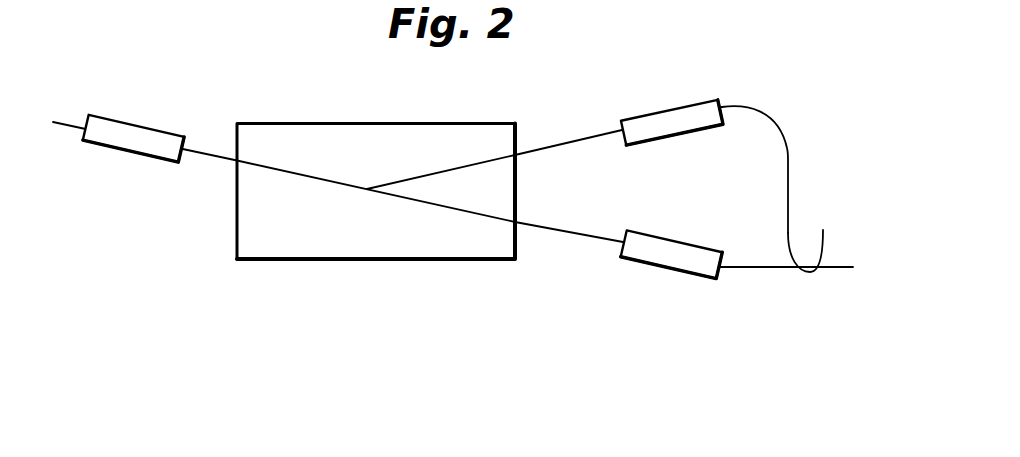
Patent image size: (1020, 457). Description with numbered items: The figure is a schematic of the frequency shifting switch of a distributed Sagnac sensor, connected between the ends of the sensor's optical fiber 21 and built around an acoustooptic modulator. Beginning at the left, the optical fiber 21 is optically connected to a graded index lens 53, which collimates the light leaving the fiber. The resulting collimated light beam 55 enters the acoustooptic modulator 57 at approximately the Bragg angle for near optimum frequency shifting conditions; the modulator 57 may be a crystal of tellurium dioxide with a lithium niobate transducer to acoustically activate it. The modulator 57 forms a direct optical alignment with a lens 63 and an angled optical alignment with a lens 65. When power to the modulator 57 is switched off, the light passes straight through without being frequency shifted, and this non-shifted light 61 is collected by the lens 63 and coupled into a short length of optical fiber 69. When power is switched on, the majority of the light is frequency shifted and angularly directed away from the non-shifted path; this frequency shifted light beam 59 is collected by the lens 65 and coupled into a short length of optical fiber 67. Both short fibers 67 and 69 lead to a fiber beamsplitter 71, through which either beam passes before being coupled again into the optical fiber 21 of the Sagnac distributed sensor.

The optical fiber 21 is at (63, 122).
The graded index lens 53 is at (137, 153).
The light beam 55 is at (198, 155).
The acoustooptic modulator 57 is at (297, 260).
The frequency shifted light beam 59 is at (545, 148).
The second split beam 61 is at (550, 232).
The lens 63 is at (700, 243).
The lens 65 is at (688, 102).
The short length of optical fiber 67 is at (778, 130).
The short length of optical fiber 69 is at (770, 243).
The fiber beamsplitter 71 is at (807, 267).